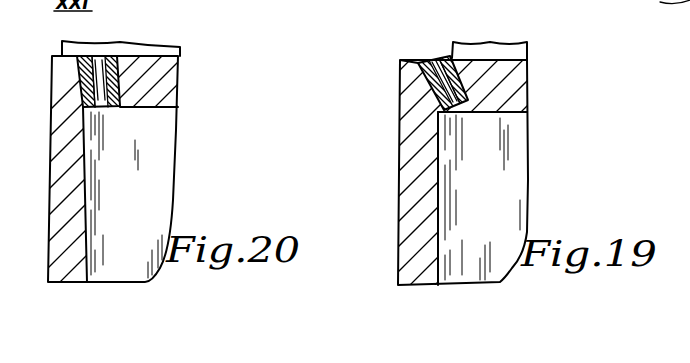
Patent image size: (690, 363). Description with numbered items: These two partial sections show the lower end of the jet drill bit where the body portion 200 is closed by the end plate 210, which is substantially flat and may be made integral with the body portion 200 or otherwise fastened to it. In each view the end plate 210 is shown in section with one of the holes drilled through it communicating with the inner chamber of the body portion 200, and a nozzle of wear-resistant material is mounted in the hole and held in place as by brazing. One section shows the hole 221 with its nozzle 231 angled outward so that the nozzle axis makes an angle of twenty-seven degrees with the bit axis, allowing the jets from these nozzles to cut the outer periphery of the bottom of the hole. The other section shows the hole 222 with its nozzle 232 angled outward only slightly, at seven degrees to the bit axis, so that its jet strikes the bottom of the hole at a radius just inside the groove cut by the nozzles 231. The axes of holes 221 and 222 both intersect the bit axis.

In FIG. 20, the body portion 200 is at (52, 118).
In FIG. 19, the body portion 200 is at (400, 118).
In FIG. 20, the end plate 210 is at (172, 78).
In FIG. 19, the end plate 210 is at (527, 92).
In FIG. 20, the hole 222 is at (105, 56).
In FIG. 20, the nozzle 232 is at (83, 56).
In FIG. 19, the hole 221 is at (421, 62).
In FIG. 19, the nozzle 231 is at (444, 55).